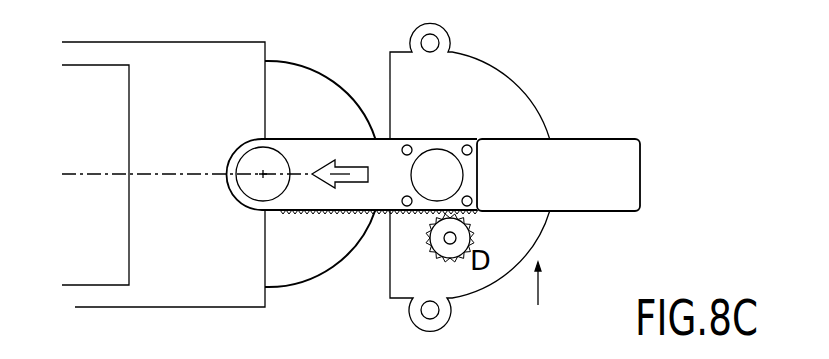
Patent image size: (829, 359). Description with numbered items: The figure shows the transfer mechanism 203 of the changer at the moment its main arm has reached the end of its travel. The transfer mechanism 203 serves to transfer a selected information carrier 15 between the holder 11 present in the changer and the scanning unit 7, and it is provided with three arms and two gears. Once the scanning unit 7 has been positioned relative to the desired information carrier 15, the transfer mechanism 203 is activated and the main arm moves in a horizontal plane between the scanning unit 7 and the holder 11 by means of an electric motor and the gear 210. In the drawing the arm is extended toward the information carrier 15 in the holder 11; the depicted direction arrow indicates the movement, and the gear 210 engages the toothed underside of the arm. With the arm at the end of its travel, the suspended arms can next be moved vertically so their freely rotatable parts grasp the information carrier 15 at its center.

The holder 11 is at (170, 55).
The information carrier 15 is at (292, 87).
The scanning unit 7 is at (472, 78).
The gear 210 is at (432, 246).
The transfer mechanism 203 is at (556, 291).